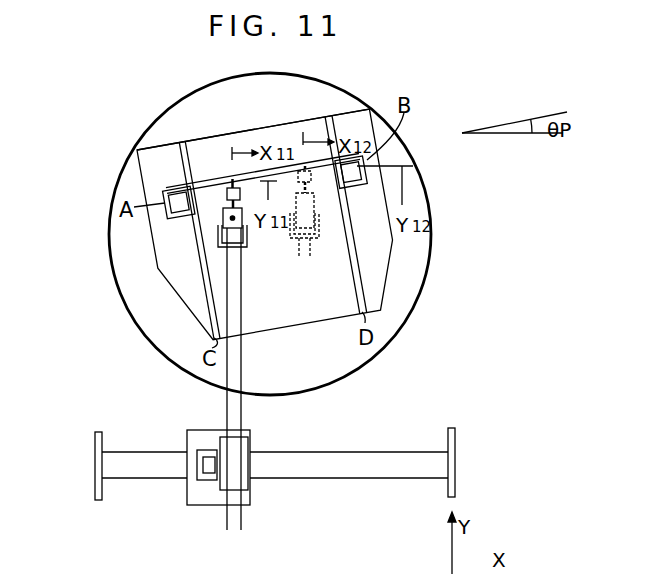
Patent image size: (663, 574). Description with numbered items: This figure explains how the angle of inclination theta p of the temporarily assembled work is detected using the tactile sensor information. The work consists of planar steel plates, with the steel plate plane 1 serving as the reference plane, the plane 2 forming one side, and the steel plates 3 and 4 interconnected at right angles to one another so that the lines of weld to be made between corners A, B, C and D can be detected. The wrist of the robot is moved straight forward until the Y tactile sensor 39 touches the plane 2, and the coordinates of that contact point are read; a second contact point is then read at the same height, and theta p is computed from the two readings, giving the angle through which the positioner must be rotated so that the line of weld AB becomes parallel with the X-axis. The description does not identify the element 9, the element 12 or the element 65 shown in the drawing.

The steel plate plane 1 is at (313, 323).
The plane 2 is at (212, 168).
The steel plate 3 is at (203, 283).
The steel plate 4 is at (362, 272).
The corner bracket 9 is at (168, 181).
The arm 12 is at (239, 416).
The Y tactile sensor 39 is at (296, 158).
The field of view circle 65 is at (123, 240).